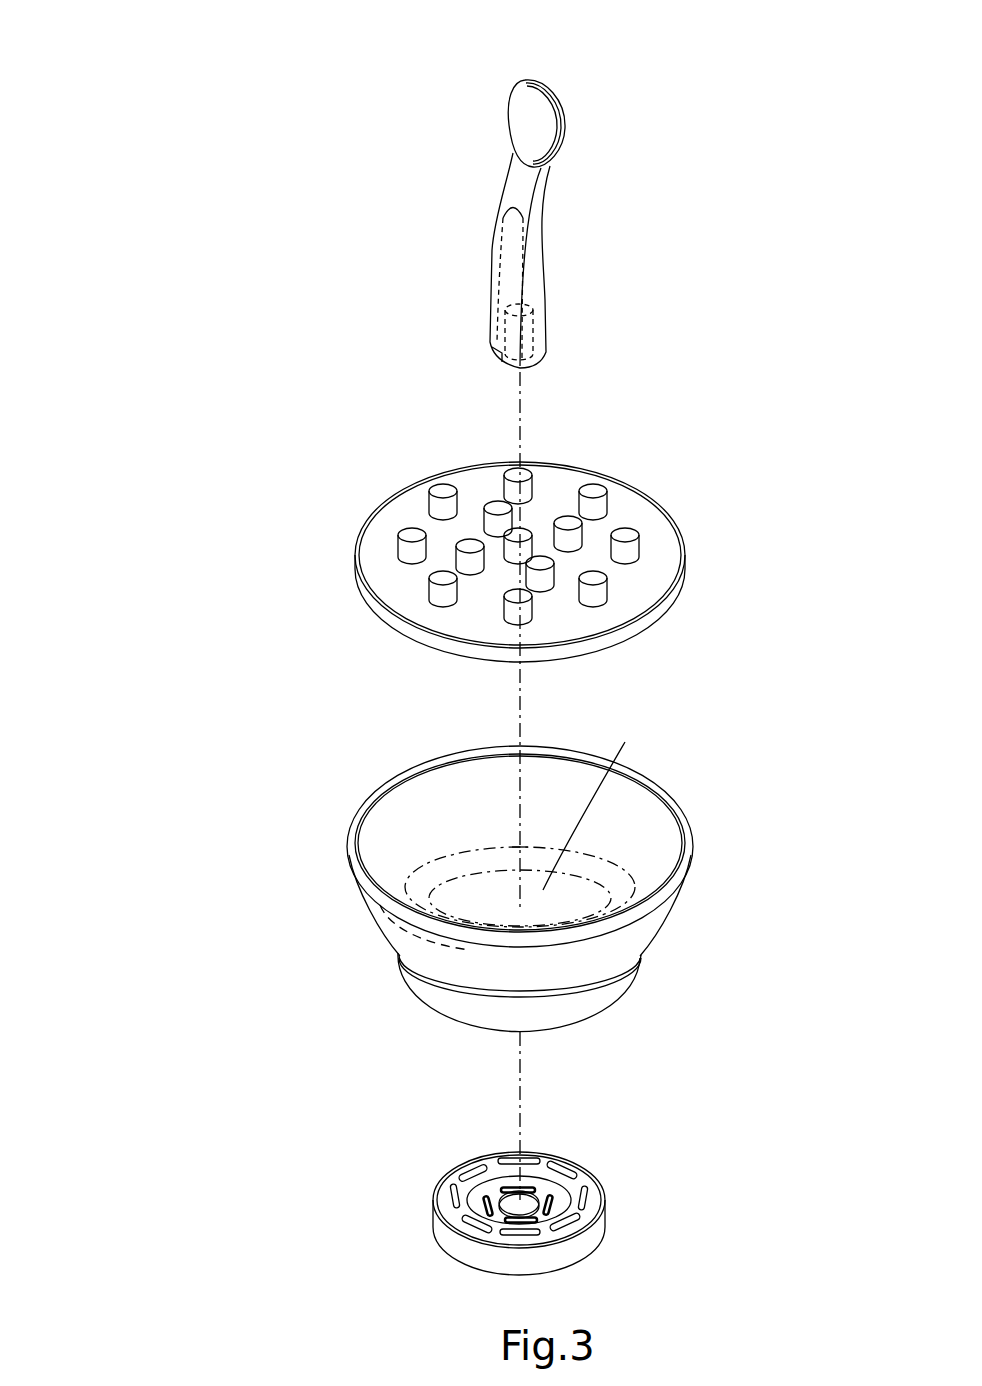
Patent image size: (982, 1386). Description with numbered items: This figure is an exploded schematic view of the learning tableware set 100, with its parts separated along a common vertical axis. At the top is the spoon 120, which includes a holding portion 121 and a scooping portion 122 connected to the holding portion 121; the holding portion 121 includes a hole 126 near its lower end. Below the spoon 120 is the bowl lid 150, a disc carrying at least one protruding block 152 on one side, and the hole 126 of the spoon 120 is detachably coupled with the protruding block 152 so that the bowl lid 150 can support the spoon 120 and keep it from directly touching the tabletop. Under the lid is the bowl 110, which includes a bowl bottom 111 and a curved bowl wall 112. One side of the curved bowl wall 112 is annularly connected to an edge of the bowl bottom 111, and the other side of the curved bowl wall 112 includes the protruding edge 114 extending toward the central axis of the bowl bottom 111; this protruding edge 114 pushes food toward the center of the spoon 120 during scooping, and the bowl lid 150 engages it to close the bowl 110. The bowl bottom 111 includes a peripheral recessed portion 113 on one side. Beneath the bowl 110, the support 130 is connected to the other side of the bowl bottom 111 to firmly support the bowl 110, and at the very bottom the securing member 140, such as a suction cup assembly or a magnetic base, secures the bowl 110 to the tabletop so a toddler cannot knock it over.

The learning tableware set 100 is at (142, 27).
The spoon 120 is at (602, 108).
The scooping portion 122 is at (566, 140).
The holding portion 121 is at (536, 267).
The hole 126 is at (521, 329).
The bowl lid 150 is at (385, 459).
The protruding block 152 is at (605, 482).
The bowl 110 is at (355, 740).
The bowl bottom 111 is at (625, 742).
The curved bowl wall 112 is at (640, 936).
The peripheral recessed portion 113 is at (422, 896).
The protruding edge 114 is at (690, 826).
The support 130 is at (463, 1012).
The securing member 140 is at (600, 1222).